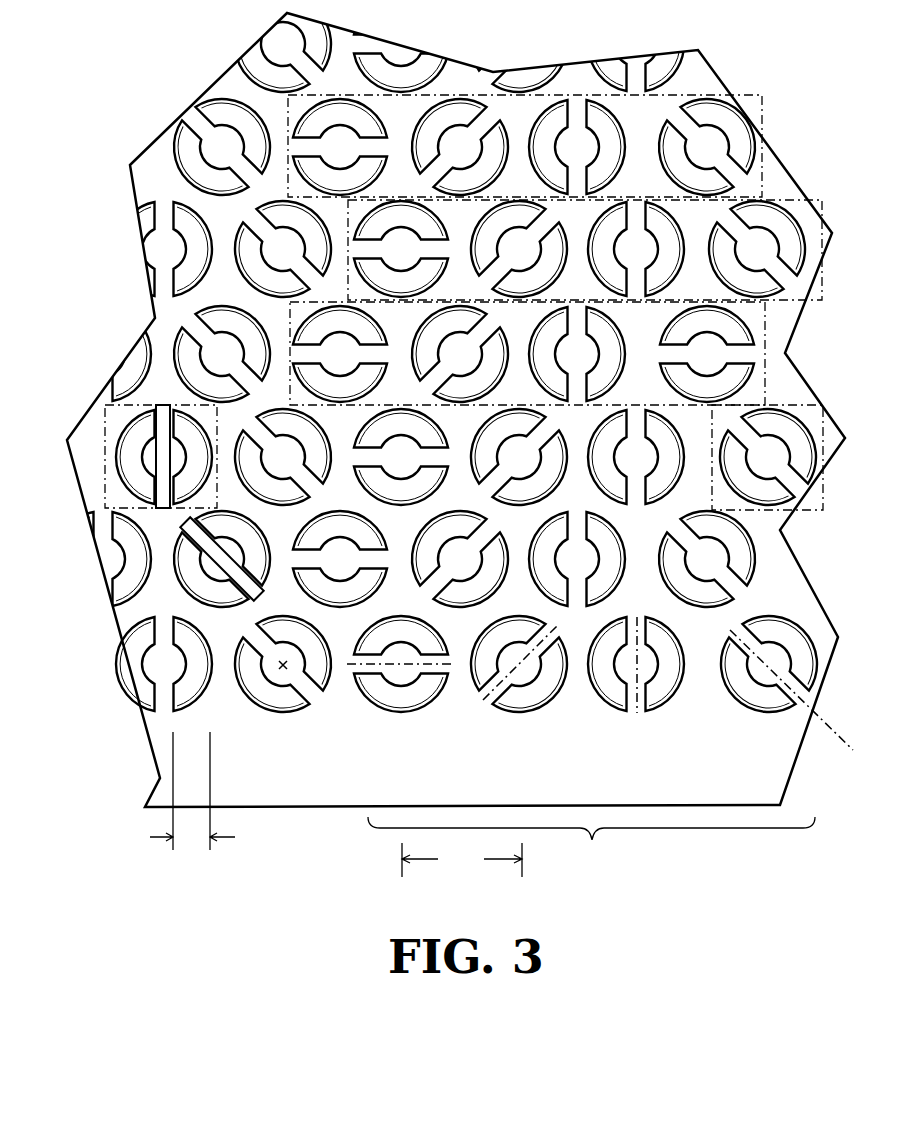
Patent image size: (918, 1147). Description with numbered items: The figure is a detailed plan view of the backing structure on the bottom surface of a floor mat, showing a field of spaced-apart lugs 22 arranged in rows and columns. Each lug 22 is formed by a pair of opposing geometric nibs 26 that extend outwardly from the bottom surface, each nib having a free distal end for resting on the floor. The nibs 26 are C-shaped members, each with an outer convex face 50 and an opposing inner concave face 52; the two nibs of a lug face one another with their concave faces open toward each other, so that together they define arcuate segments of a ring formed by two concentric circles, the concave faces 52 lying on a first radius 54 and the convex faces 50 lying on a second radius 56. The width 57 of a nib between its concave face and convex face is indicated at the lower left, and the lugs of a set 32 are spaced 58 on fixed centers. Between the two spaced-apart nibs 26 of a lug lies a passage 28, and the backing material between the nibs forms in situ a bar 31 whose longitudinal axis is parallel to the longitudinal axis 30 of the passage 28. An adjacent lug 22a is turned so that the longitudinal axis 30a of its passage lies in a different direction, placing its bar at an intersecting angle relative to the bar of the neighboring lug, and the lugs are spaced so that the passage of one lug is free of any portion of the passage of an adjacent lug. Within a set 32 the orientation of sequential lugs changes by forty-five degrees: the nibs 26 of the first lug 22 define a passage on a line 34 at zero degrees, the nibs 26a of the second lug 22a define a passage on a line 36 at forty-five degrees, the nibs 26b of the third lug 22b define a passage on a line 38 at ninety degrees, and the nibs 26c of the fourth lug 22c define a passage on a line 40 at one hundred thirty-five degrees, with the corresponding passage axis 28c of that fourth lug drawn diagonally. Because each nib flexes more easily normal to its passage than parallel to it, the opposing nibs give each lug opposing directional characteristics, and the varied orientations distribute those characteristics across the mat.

The lug 22 is at (803, 413).
The adjacent second lug 22a is at (552, 715).
The third lug 22b is at (663, 727).
The fourth lug 22c is at (758, 715).
The geometric nib 26 is at (137, 428).
The nibs of second lug 26a is at (503, 632).
The nibs of third lug 26b is at (670, 620).
The nibs of fourth lug 26c is at (740, 697).
The passage 28 is at (448, 670).
The gap axis 28c is at (823, 693).
The longitudinal axis 30 is at (355, 668).
The longitudinal axis of adjacent lug passage 30a is at (552, 628).
The bar 31 is at (157, 448).
The set of lugs 32 is at (763, 150).
The line oriented at 0° 34 is at (450, 663).
The line oriented at 45° 36 is at (560, 633).
The line oriented at 90° 38 is at (645, 714).
The line oriented at 135° 40 is at (815, 733).
The convex face 50 is at (253, 703).
The concave face 52 is at (260, 645).
The first radius 54 is at (282, 672).
The second radius 56 is at (305, 625).
The width of nib 57 is at (190, 847).
The spacing of lugs 58 is at (462, 860).